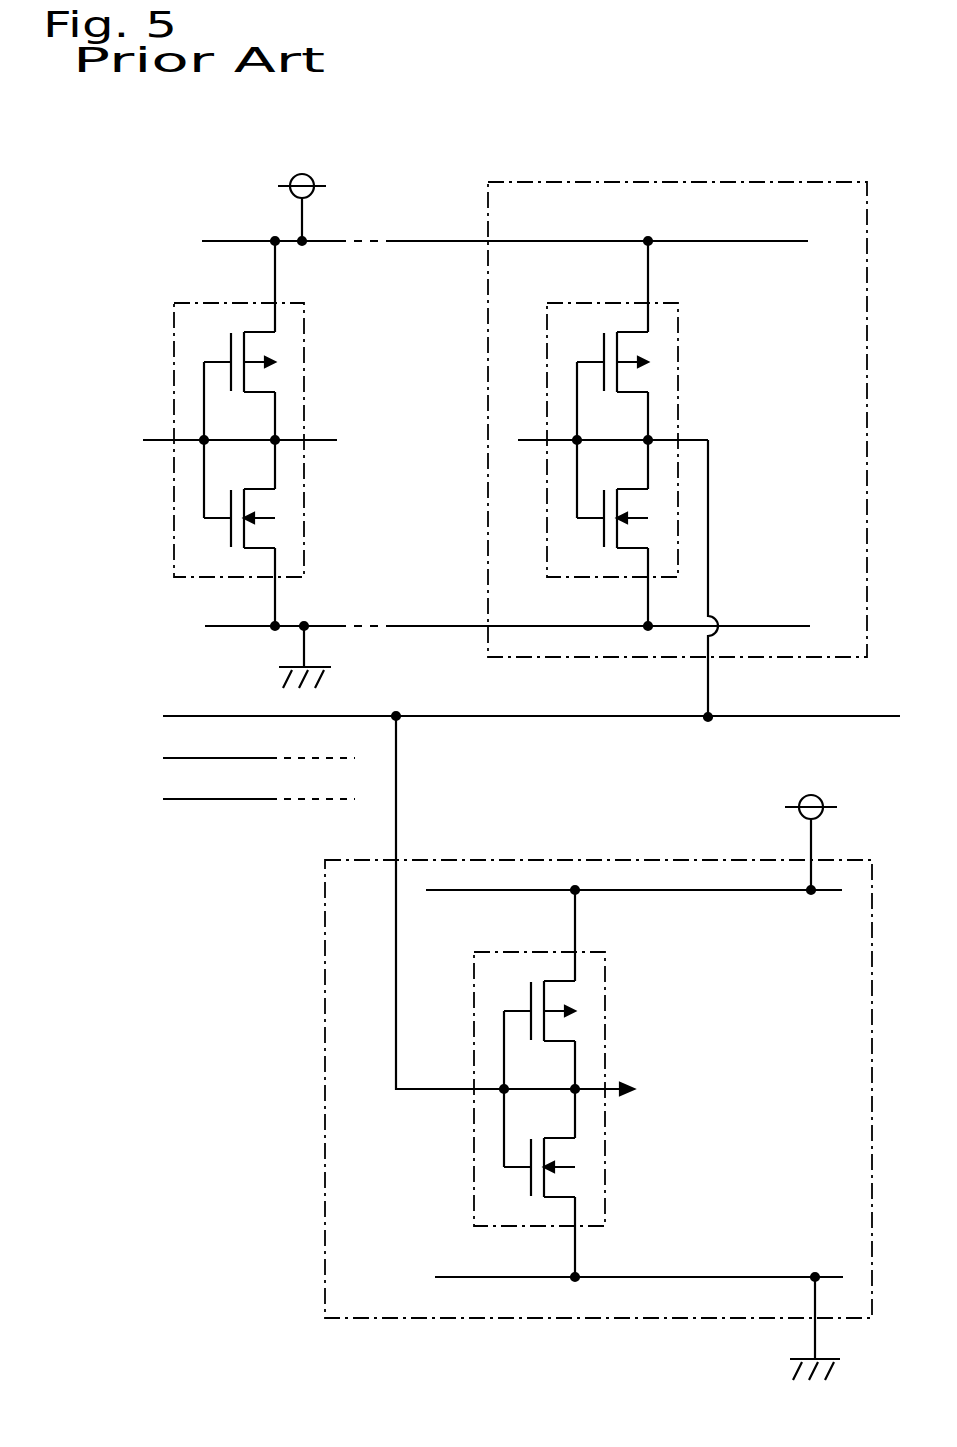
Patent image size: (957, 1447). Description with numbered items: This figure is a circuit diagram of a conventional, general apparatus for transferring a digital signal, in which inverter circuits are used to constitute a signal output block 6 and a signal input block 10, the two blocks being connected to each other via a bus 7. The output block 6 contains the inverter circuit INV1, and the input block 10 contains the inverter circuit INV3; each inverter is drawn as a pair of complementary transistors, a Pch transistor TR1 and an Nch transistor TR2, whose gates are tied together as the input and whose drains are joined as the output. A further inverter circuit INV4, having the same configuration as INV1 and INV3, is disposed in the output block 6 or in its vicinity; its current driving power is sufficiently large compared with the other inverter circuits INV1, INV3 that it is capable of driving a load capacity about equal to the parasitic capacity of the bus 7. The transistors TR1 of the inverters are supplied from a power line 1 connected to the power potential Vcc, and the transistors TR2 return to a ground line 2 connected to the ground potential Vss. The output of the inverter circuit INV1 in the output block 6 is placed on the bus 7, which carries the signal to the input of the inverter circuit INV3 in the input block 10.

The power line 1 is at (316, 180).
The ground line 2 is at (326, 650).
The signal output block 6 is at (776, 181).
The bus 7 is at (98, 692).
The signal input block 10 is at (325, 1068).
The Pch transistor TR1 is at (278, 350).
The Nch transistor TR2 is at (278, 506).
The inverter circuit INV1 is at (596, 302).
The inverter circuit INV3 is at (524, 951).
The inverter circuit INV4 is at (466, 717).